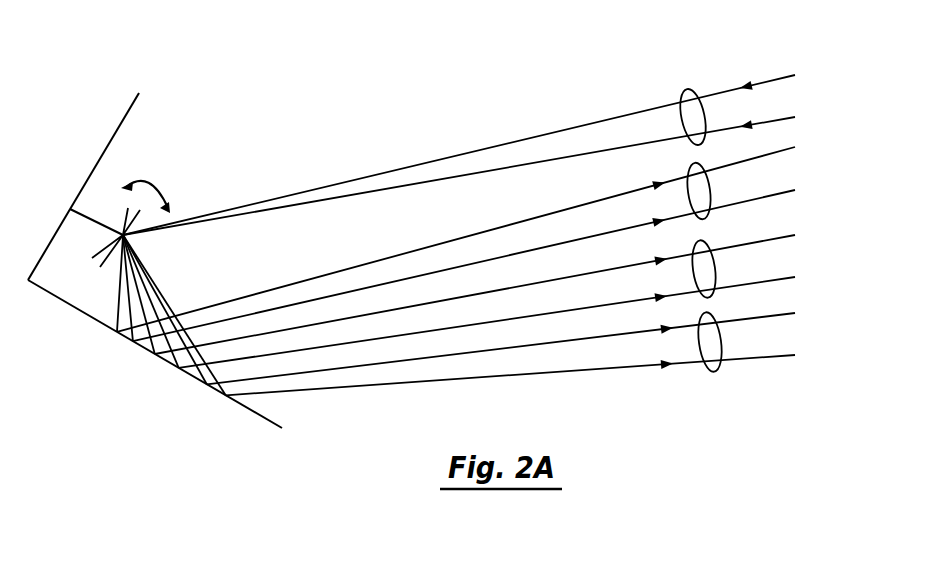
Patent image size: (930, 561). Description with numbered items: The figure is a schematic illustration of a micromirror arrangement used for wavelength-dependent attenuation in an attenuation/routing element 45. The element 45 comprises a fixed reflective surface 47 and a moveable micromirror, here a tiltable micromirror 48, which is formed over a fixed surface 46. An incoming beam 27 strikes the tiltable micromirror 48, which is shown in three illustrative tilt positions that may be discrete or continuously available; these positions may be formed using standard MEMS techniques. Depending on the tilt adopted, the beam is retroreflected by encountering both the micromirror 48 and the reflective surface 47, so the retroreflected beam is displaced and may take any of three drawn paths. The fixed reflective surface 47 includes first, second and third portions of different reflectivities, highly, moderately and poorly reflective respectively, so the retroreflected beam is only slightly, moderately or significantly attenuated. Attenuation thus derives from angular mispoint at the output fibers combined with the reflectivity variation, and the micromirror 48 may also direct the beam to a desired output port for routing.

The incoming beam 27 is at (685, 90).
The attenuation/routing element 45 is at (203, 458).
The fixed surface 46 is at (100, 158).
The fixed reflective surface 47 is at (258, 418).
The tiltable micromirror 48 is at (152, 217).